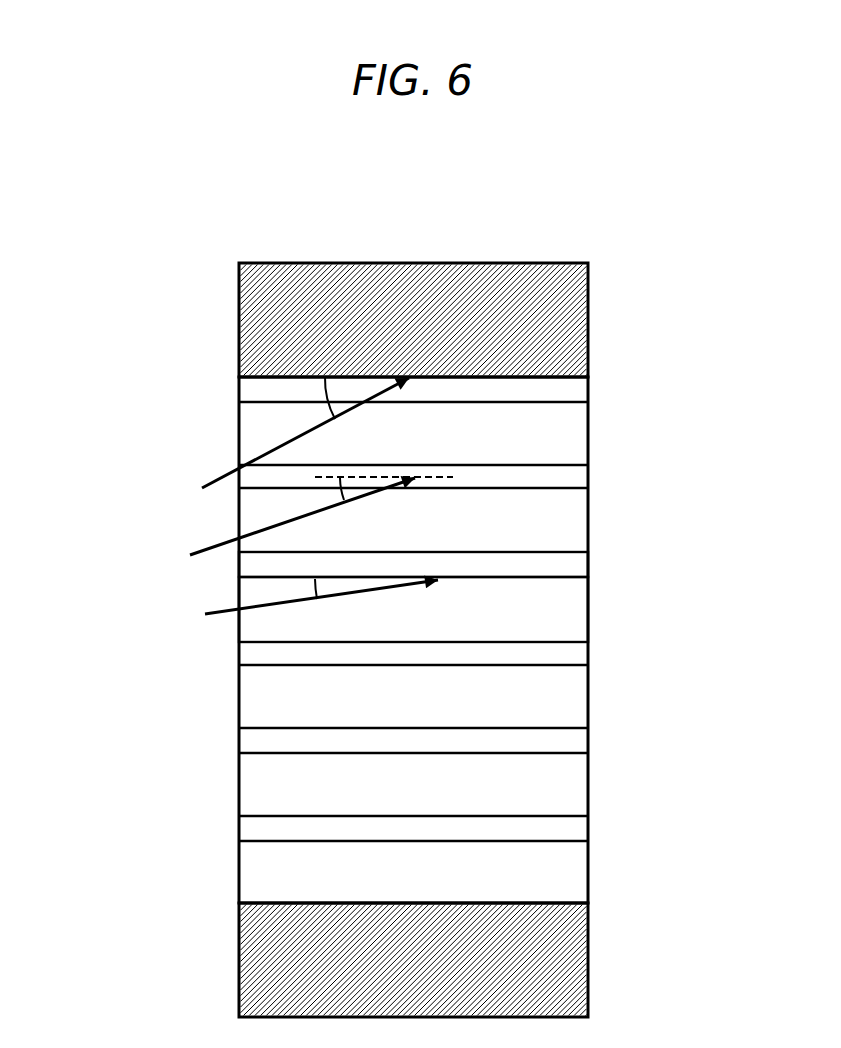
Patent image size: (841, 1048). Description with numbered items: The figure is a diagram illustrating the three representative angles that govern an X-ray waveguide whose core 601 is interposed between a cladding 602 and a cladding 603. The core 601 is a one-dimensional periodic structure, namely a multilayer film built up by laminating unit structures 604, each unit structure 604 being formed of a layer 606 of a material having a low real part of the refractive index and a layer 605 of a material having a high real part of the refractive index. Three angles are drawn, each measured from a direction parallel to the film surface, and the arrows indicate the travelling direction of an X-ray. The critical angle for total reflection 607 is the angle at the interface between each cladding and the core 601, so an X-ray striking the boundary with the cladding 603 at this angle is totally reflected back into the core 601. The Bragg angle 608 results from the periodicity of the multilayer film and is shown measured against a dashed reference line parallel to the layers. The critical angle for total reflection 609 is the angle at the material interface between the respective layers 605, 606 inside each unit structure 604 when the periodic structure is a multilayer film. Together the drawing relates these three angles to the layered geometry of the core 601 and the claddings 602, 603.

The core 601 is at (202, 376).
The cladding 602 is at (202, 908).
The cladding 603 is at (202, 263).
The unit structure 604 is at (487, 590).
The layer of a material having a high real part of the refractive index 605 is at (550, 613).
The layer of a material having a low real part of the refractive index 606 is at (565, 565).
The critical angle for total reflection at the interface between each cladding and t 607 is at (325, 388).
The Bragg angle 608 is at (333, 492).
The critical angle for total reflection at a material interface in each unit structu 609 is at (318, 582).